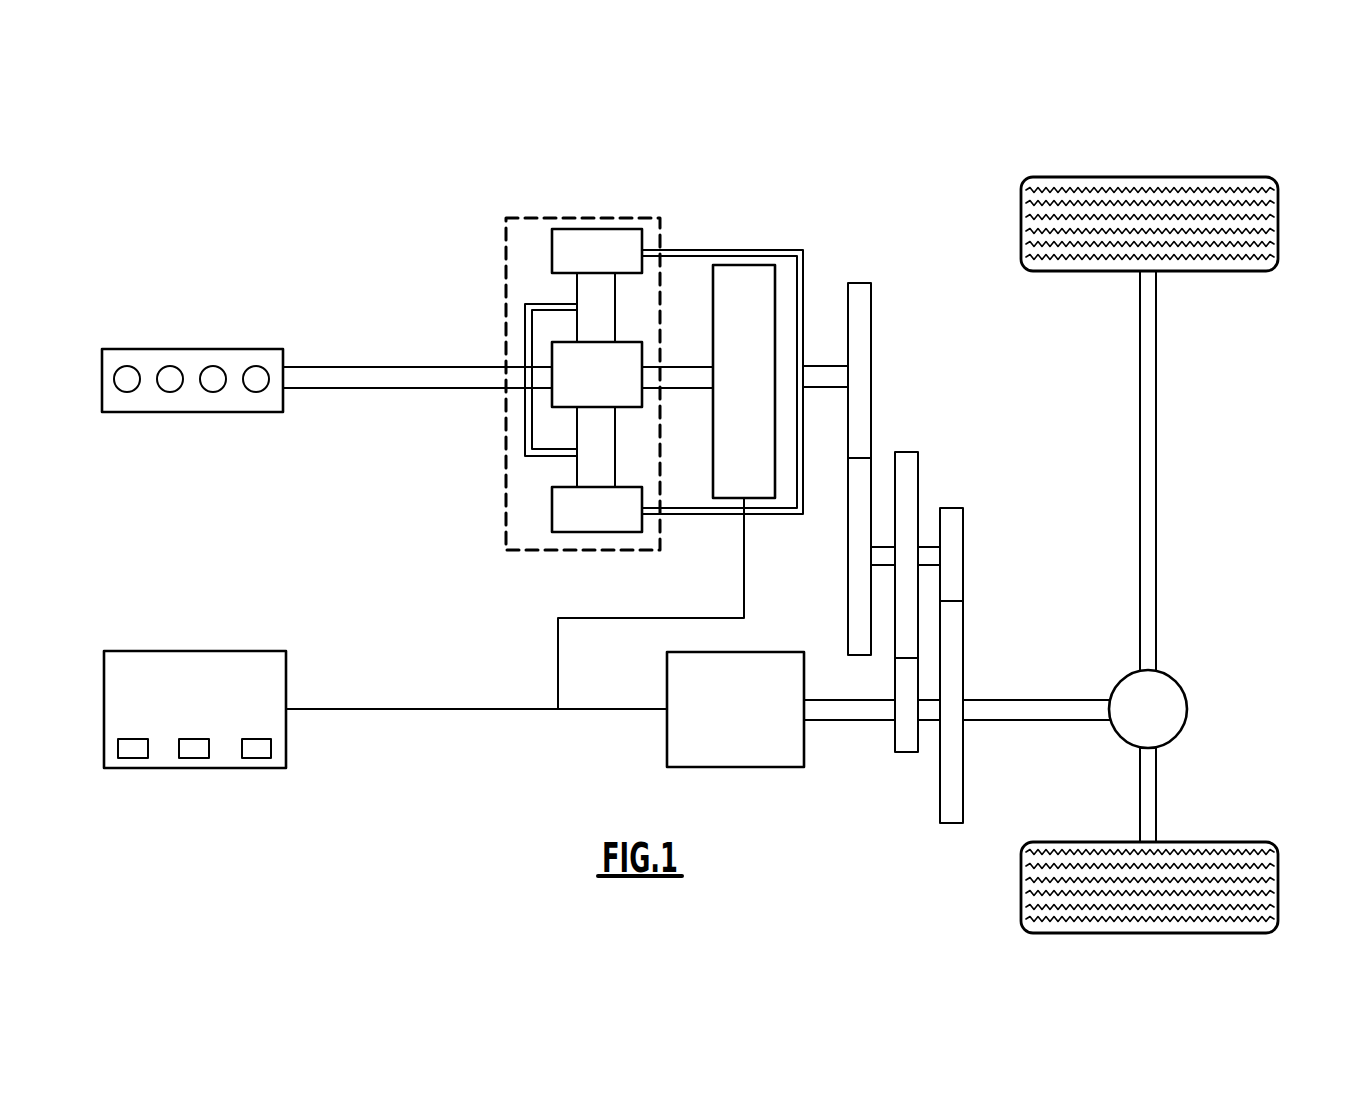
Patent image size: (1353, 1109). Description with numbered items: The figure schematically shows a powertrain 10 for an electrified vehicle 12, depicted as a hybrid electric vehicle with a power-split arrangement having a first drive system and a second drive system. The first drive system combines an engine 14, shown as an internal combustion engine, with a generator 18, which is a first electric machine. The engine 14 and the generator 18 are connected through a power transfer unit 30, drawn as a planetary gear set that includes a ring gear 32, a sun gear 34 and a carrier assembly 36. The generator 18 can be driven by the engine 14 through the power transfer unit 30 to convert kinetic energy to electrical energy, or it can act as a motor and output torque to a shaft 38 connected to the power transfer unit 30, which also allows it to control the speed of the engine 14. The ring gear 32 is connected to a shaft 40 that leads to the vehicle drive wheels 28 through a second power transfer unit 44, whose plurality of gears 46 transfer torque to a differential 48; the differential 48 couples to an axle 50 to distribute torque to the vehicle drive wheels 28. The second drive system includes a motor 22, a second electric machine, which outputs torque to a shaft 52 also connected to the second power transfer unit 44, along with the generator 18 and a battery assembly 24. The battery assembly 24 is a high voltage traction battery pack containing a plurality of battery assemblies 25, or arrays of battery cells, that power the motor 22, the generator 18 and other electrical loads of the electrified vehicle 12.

The powertrain 10 is at (335, 238).
The electrified vehicle 12 is at (770, 168).
The engine 14 is at (122, 349).
The generator 18 is at (722, 265).
The motor 22 is at (805, 750).
The battery assembly 24 is at (122, 651).
The battery assemblies 25 is at (148, 750).
The vehicle drive wheels 28 is at (1277, 883).
The power transfer unit 30 is at (505, 503).
The ring gear 32 is at (552, 248).
The sun gear 34 is at (552, 352).
The carrier assembly 36 is at (525, 438).
The shaft 38 is at (678, 362).
The shaft 40 is at (823, 365).
The second power transfer unit 44 is at (955, 400).
The gears 46 is at (871, 419).
The differential 48 is at (1182, 730).
The axle 50 is at (1158, 460).
The shaft 52 is at (860, 720).